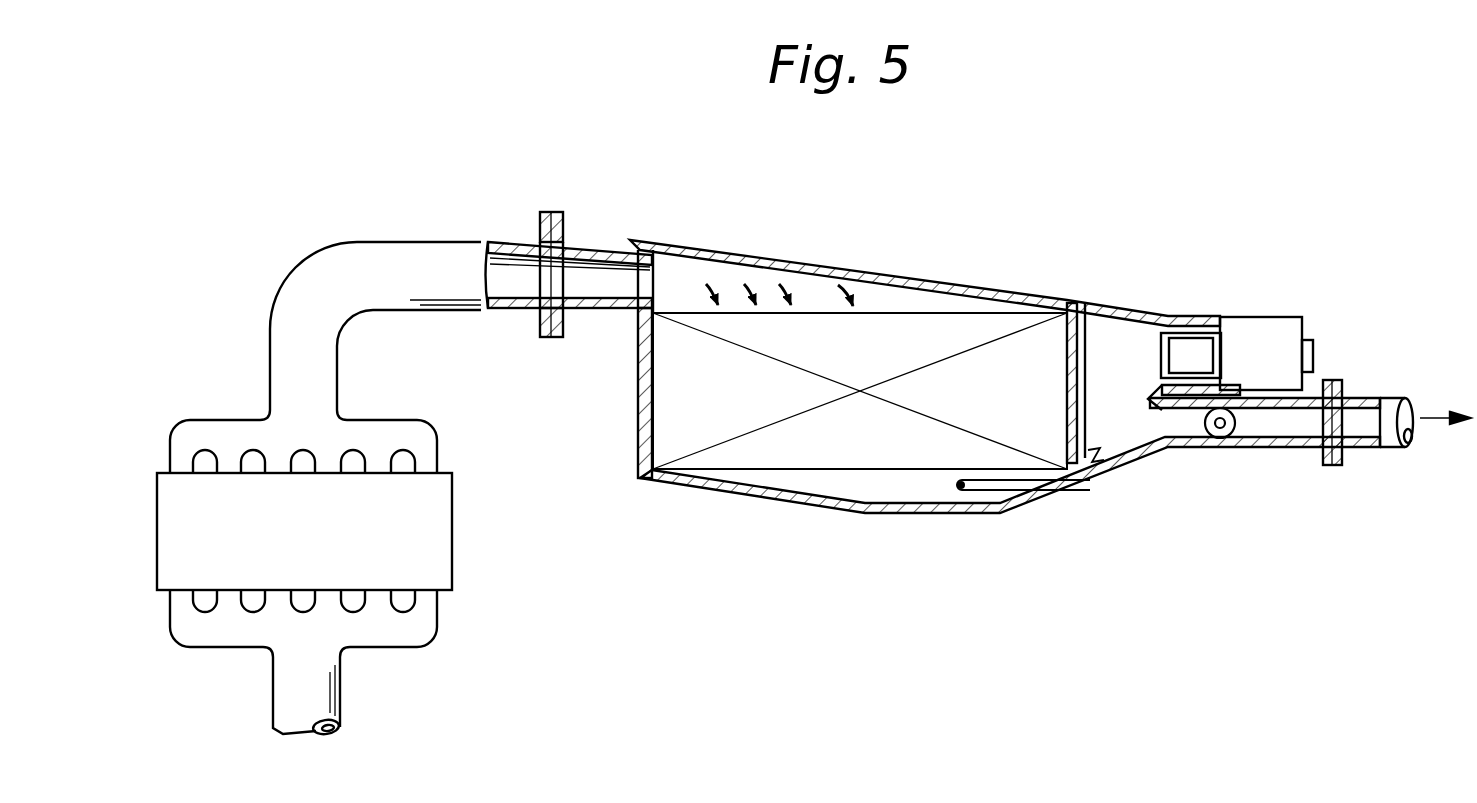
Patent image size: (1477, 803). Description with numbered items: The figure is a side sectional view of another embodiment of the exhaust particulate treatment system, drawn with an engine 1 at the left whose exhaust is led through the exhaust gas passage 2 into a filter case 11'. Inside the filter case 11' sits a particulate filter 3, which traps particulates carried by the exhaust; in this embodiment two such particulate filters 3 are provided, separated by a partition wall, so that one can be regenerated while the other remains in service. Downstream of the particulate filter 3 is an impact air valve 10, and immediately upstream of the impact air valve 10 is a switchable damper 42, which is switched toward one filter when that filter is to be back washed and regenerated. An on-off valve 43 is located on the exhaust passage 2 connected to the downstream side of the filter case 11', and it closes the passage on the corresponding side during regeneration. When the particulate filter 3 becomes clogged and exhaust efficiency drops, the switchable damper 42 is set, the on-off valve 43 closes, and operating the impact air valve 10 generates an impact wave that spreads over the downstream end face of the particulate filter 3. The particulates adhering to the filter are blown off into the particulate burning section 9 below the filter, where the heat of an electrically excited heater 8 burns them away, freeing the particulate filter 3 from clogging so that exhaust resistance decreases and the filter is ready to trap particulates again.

The internal combustion engine 1 is at (221, 407).
The exhaust gas passage 2 is at (404, 230).
The particulate filter 3 is at (911, 318).
The heater 8 is at (960, 494).
The particulate burning section 9 is at (886, 490).
The impact air valve 10 is at (1263, 310).
The filter case 11' is at (1050, 319).
The switchable damper 42 is at (1190, 358).
The on-off valve 43 is at (1222, 438).